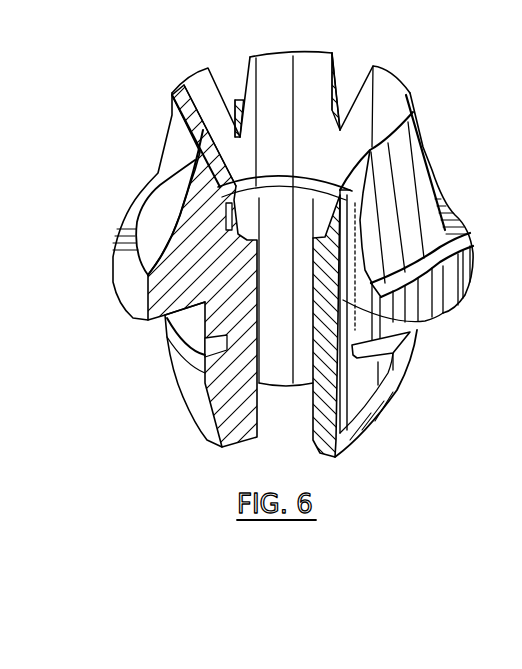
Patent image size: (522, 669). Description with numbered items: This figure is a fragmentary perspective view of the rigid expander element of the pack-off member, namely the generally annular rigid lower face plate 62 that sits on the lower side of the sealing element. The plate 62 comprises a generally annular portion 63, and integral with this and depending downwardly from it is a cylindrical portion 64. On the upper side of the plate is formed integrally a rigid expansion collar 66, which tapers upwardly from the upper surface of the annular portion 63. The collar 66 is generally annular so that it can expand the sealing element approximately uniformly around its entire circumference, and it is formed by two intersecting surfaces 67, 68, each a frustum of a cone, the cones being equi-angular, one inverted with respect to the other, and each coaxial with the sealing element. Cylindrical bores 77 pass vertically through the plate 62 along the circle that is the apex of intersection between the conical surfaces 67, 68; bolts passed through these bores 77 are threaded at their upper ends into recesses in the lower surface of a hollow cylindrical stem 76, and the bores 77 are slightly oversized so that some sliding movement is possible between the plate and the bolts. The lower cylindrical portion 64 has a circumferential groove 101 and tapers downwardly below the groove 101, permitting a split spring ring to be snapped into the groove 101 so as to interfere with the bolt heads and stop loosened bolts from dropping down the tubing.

The lower face plate 62 is at (97, 311).
The annular portion 63 is at (117, 272).
The cylindrical portion 64 is at (177, 355).
The expansion collar 66 is at (207, 175).
The conical surface 67 is at (158, 198).
The conical surface 68 is at (278, 77).
The hollow cylindrical stem 76 is at (360, 87).
The cylindrical bores 77 is at (412, 322).
The circumferential groove 101 is at (396, 353).